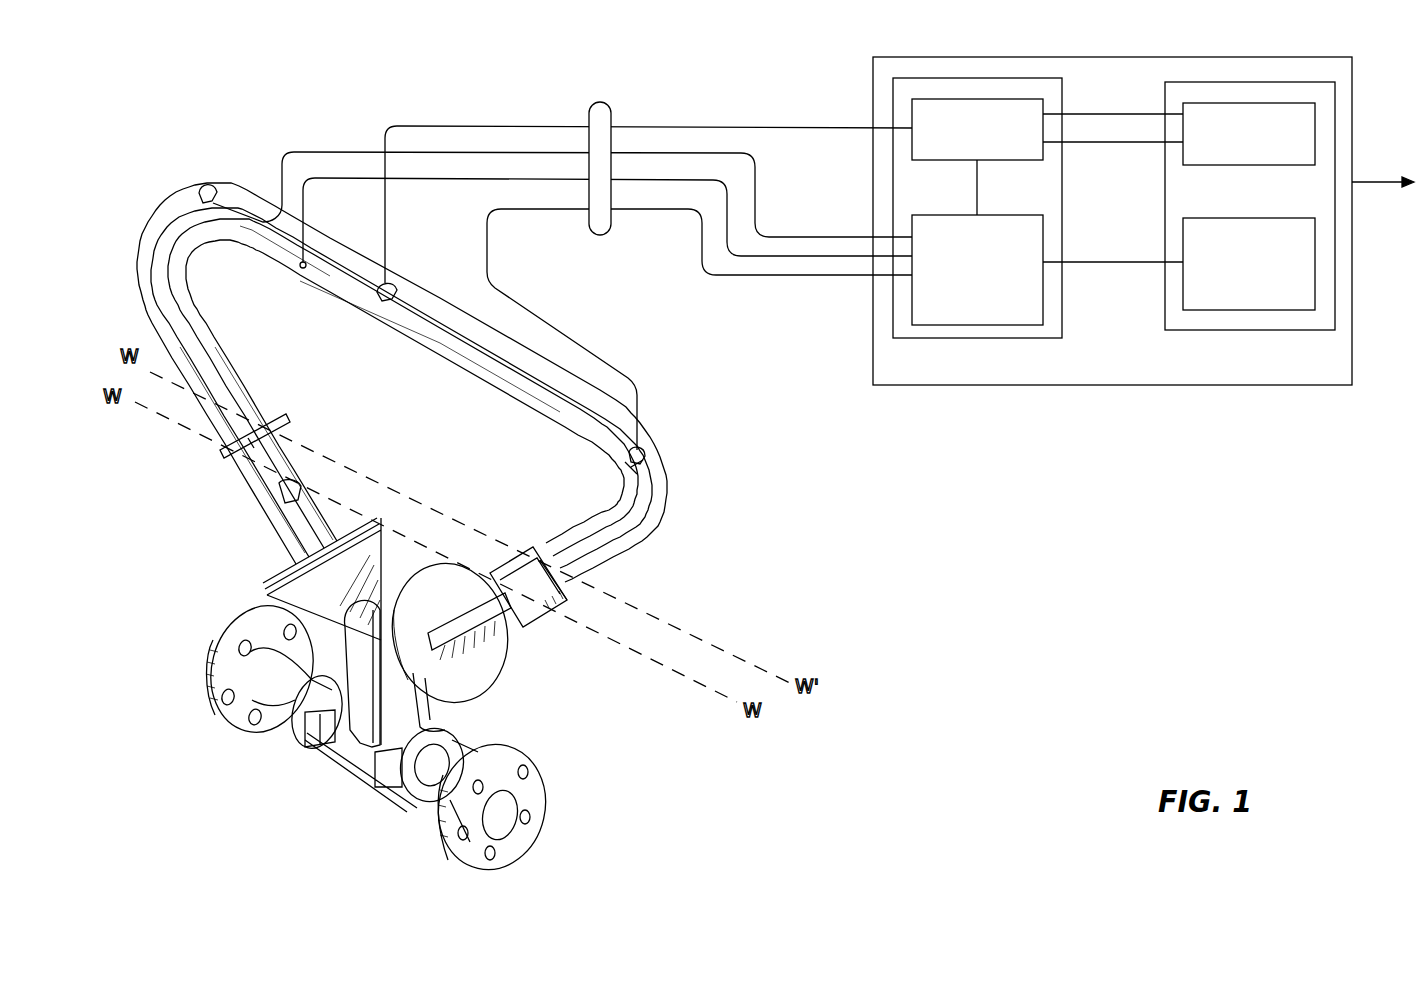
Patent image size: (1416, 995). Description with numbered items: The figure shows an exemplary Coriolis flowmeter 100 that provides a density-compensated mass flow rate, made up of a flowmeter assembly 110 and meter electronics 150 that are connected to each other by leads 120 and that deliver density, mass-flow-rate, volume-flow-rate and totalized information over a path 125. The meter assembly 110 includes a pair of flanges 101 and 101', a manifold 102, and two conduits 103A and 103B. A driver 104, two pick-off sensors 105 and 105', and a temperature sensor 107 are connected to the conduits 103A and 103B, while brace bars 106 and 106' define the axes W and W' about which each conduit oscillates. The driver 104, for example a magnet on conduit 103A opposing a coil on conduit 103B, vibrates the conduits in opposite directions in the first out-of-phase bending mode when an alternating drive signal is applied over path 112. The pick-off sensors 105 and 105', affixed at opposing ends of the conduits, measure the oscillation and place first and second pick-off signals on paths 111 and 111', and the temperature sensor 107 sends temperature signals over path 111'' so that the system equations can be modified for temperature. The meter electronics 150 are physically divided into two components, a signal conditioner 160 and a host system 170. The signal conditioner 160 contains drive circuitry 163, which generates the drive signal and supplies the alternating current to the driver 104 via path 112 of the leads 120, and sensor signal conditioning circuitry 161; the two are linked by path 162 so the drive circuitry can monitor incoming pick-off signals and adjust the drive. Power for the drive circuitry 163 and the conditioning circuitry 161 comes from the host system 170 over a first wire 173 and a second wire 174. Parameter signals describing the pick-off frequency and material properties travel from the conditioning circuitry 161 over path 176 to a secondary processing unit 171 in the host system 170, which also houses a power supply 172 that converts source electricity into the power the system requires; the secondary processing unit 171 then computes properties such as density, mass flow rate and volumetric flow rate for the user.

The Coriolis flowmeter 100 is at (962, 682).
The flange 101 is at (216, 669).
The flange 101' is at (522, 807).
The manifold 102 is at (362, 700).
The conduit 103A is at (340, 288).
The conduit 103B is at (480, 334).
The driver 104 is at (372, 283).
The pick-off sensor 105 is at (185, 166).
The pick-off sensor 105' is at (695, 460).
The brace bar 106 is at (221, 446).
The brace bar 106' is at (541, 558).
The temperature sensor 107 is at (300, 271).
The flowmeter assembly 110 is at (592, 678).
The path 111 is at (562, 194).
The path 111' is at (699, 329).
The path 111'' is at (607, 244).
The path 112 is at (682, 124).
The leads 120 is at (592, 107).
The path 125 is at (1390, 181).
The meter electronics 150 is at (872, 88).
The signal conditioner 160 is at (993, 340).
The sensor signal conditioning circuitry 161 is at (1044, 224).
The path 162 is at (979, 177).
The drive circuitry 163 is at (952, 162).
The host system 170 is at (1256, 331).
The secondary processing unit 171 is at (1260, 217).
The power supply 172 is at (1240, 167).
The first wire 173 is at (1125, 113).
The second wire 174 is at (1114, 144).
The path 176 is at (1112, 264).